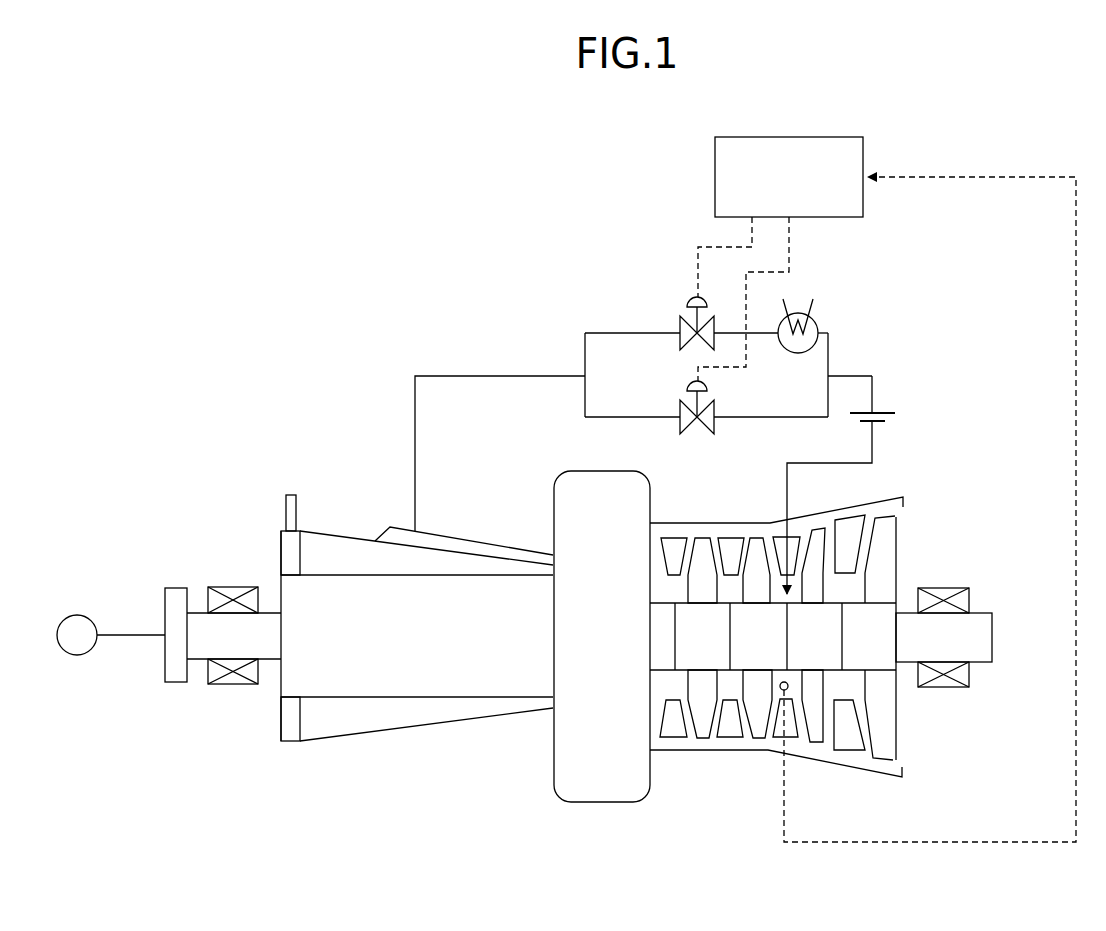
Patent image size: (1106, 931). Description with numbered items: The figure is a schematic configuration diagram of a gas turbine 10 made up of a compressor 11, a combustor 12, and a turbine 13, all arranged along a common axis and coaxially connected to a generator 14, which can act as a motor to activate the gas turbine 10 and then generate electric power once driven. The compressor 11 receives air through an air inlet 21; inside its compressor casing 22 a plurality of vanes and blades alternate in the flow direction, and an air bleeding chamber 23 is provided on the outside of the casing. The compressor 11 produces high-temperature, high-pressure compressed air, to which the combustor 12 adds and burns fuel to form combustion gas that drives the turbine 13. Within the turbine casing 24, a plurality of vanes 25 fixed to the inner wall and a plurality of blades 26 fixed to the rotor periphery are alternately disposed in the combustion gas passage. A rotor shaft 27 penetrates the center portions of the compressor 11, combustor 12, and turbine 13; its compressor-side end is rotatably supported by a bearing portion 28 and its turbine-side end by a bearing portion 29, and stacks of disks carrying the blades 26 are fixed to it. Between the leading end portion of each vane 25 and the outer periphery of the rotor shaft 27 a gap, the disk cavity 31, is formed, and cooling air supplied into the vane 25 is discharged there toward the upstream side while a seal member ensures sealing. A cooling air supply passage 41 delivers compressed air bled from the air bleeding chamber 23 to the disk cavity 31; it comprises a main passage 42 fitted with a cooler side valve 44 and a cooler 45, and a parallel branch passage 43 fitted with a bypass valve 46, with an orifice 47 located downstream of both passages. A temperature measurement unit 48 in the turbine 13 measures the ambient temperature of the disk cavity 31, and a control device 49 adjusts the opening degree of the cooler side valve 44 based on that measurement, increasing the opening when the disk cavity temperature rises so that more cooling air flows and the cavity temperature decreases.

The gas turbine 10 is at (156, 174).
The compressor 11 is at (252, 441).
The combustor 12 is at (541, 479).
The turbine 13 is at (970, 468).
The generator 14 is at (80, 614).
The air inlet 21 is at (284, 500).
The compressor casing 22 is at (333, 528).
The air bleeding chamber 23 is at (463, 538).
The turbine casing 24 is at (737, 752).
The vanes 25 is at (673, 545).
The blades 26 is at (702, 730).
The rotor shaft 27 is at (232, 636).
The bearing portion 28 is at (232, 586).
The bearing portion 29 is at (972, 605).
The disk cavity 31 is at (590, 472).
The cooling air supply passage 41 is at (512, 376).
The main passage 42 is at (600, 333).
The branch passage 43 is at (600, 417).
The cooler side valve 44 is at (688, 301).
The cooler 45 is at (816, 322).
The bypass valve 46 is at (714, 410).
The orifice 47 is at (884, 411).
The temperature measurement unit 48 is at (843, 697).
The control device 49 is at (866, 142).